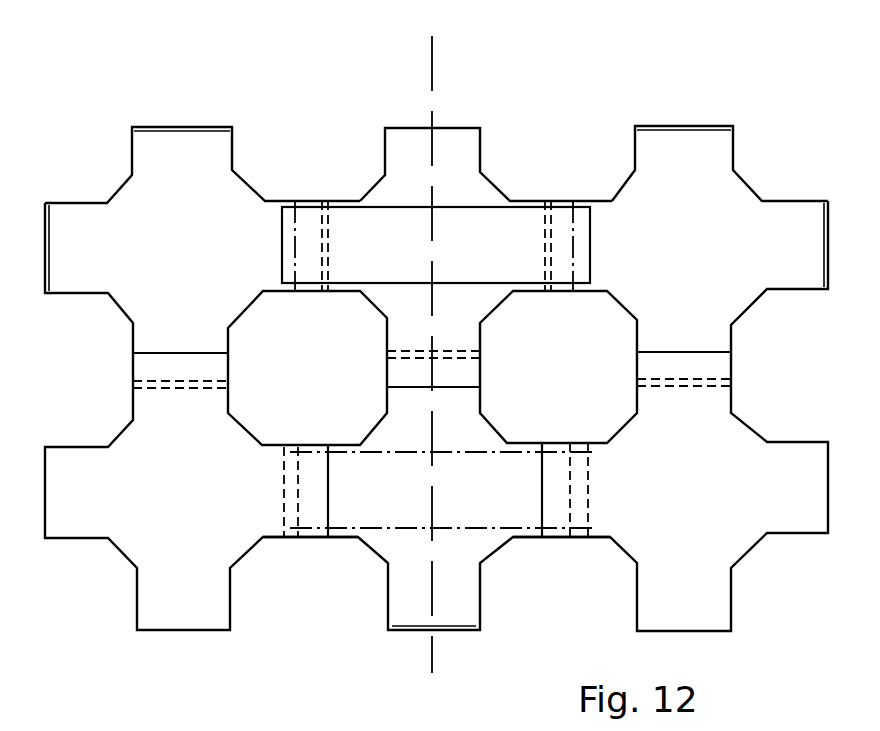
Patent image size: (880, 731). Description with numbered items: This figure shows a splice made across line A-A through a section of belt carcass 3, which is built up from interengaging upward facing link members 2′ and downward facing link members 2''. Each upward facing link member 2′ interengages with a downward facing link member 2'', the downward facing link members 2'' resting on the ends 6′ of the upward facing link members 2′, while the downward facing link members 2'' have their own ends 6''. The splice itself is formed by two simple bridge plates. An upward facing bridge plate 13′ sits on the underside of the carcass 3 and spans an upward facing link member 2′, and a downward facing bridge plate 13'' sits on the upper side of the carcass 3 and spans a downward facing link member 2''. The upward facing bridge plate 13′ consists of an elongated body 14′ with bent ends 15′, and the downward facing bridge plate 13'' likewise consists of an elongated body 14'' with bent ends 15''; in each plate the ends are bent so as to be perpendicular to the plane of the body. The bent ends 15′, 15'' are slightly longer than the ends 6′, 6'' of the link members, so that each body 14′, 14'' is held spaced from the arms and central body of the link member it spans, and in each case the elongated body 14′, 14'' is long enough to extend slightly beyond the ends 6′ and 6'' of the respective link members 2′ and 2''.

The carcass 3 is at (604, 82).
The upward facing link member 2′ is at (186, 130).
The downward facing link member 2'' is at (486, 134).
The end of downward facing link member 6'' is at (432, 368).
The end of upward facing link member 6′ is at (298, 540).
The downward facing bridge plate 13'' is at (436, 218).
The upward facing bridge plate 13′ is at (461, 534).
The elongated body of downward facing bridge plate 14'' is at (434, 222).
The elongated body of upward facing bridge plate 14′ is at (387, 513).
The bent end of downward facing bridge plate 15'' is at (464, 223).
The bent end of upward facing bridge plate 15′ is at (285, 500).